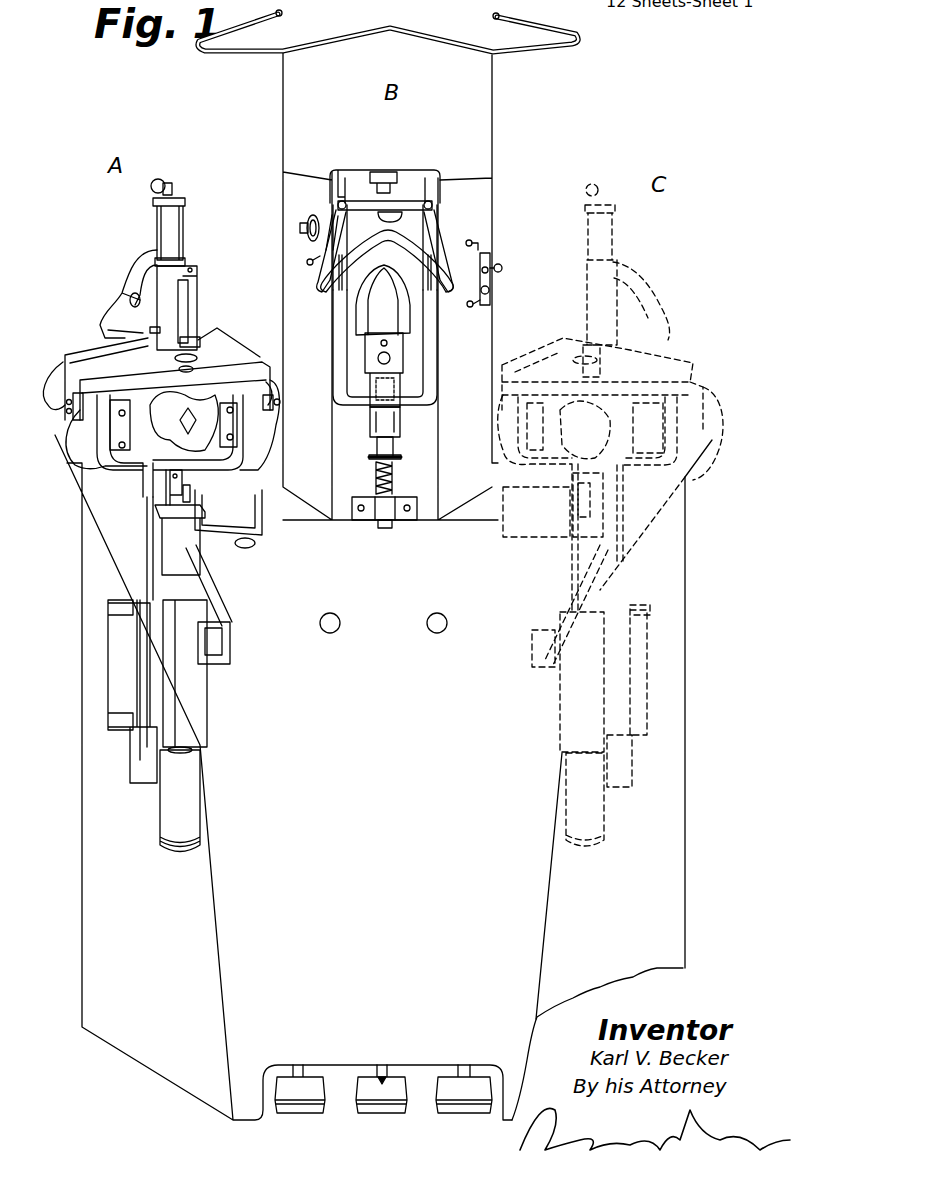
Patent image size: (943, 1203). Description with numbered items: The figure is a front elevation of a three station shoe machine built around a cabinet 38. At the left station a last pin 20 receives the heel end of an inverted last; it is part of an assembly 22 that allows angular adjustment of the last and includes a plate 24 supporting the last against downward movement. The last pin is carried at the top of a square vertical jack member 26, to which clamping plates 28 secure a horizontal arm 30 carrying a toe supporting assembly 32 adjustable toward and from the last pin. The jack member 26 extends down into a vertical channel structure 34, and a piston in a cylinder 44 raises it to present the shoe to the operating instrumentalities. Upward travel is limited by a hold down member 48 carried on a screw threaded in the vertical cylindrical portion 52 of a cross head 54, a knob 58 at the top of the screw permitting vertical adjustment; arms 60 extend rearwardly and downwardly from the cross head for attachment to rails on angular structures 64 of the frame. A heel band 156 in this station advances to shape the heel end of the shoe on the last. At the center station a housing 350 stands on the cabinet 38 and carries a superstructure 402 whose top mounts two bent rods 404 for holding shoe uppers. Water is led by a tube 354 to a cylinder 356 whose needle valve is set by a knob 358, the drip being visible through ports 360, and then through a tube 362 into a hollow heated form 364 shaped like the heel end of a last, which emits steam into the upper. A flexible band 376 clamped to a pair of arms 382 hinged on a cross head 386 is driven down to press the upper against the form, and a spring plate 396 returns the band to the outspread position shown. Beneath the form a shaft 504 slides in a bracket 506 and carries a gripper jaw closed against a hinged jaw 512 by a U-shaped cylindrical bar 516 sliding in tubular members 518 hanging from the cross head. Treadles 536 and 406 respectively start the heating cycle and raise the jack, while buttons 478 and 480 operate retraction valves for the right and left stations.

The last pin 20 is at (180, 483).
The last pin assembly 22 is at (128, 522).
The plate 24 is at (180, 493).
The jack member 26 is at (167, 583).
The clamping plates 28 is at (163, 543).
The horizontal arm 30 is at (193, 610).
The toe supporting assembly 32 is at (255, 561).
The channel structure 34 is at (202, 698).
The cabinet 38 is at (100, 862).
The cylinder 44 is at (193, 812).
The hold down member 48 is at (182, 422).
The vertical cylindrical portion 52 is at (238, 375).
The cross head 54 is at (237, 377).
The knob 58 is at (202, 348).
The arms 60 is at (68, 407).
The angular structures 64 is at (57, 400).
The heel band 156 is at (160, 400).
The housing 350 is at (293, 215).
The tube 354 is at (470, 243).
The cylinder 356 is at (477, 257).
The knob 358 is at (500, 265).
The ports 360 is at (480, 278).
The tube 362 is at (473, 303).
The form 364 is at (365, 310).
The band 376 is at (343, 275).
The arms 382 is at (443, 230).
The cross head 386 is at (401, 197).
The spring plate 396 is at (335, 212).
The superstructure 402 is at (492, 108).
The bent rods 404 is at (193, 40).
The treadle 406 is at (302, 1097).
The button 478 is at (437, 633).
The button 480 is at (331, 633).
The shaft 504 is at (383, 527).
The bracket 506 is at (375, 517).
The jaw 512 is at (395, 390).
The U-shaped cylindrical bar 516 is at (428, 402).
The tubular members 518 is at (433, 322).
The treadle 536 is at (390, 1097).